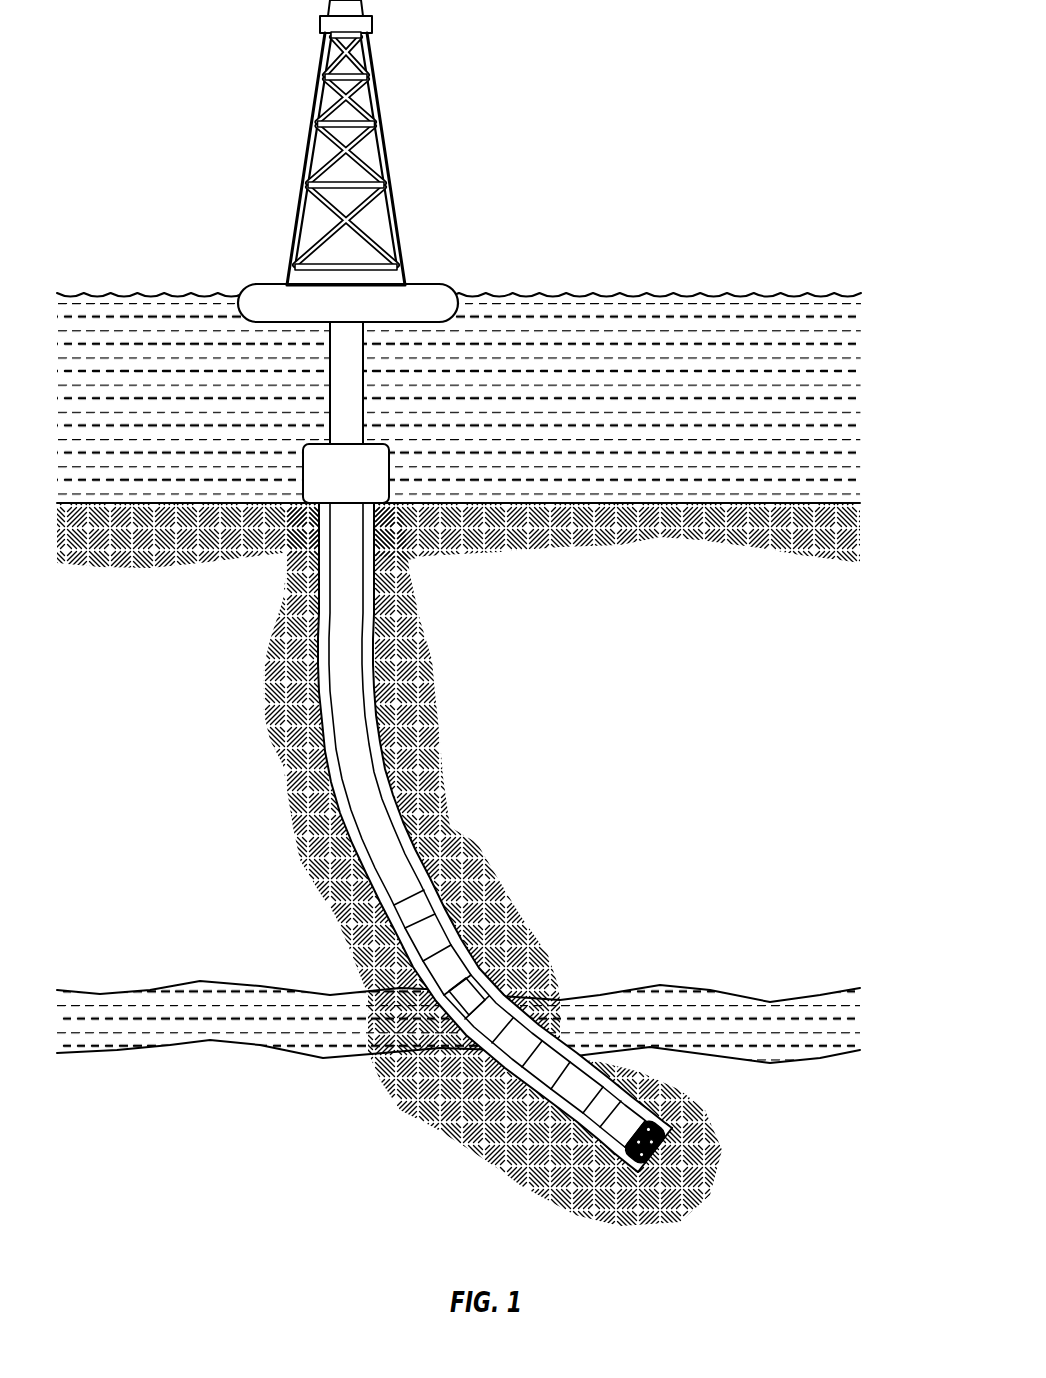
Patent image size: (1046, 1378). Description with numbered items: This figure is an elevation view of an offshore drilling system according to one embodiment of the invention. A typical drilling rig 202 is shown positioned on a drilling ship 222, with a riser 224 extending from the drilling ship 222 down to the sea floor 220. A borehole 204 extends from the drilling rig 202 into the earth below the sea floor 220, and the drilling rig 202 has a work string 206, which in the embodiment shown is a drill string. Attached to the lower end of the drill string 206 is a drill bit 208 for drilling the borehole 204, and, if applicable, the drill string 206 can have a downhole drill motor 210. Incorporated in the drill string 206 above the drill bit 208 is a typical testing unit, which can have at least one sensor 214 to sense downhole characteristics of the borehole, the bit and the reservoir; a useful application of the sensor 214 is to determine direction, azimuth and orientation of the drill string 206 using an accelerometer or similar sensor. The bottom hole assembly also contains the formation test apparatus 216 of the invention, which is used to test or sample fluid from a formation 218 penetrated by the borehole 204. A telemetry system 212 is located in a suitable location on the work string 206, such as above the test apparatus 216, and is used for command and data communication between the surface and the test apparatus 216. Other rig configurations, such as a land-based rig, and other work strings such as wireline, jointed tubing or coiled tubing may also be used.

The drilling rig 202 is at (390, 195).
The borehole 204 is at (370, 667).
The work string 206 is at (348, 622).
The drill bit 208 is at (610, 1180).
The downhole drill motor 210 is at (562, 1142).
The telemetry system 212 is at (437, 935).
The sensor 214 is at (520, 1152).
The formation test apparatus 216 is at (478, 1028).
The formation 218 is at (175, 1008).
The sea floor 220 is at (603, 502).
The drilling ship 222 is at (428, 286).
The riser 224 is at (364, 402).